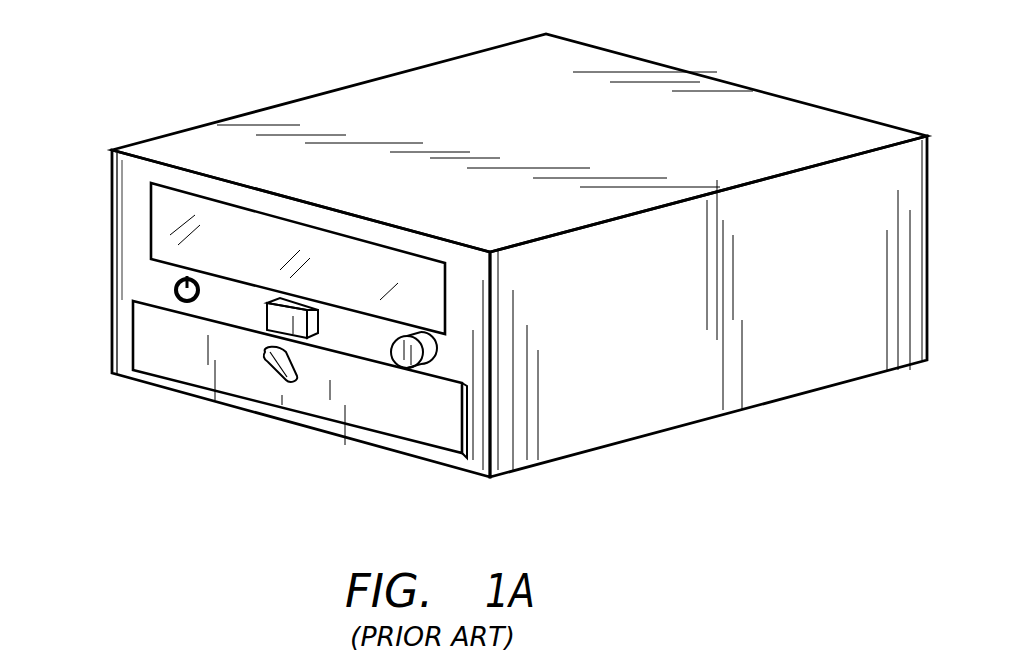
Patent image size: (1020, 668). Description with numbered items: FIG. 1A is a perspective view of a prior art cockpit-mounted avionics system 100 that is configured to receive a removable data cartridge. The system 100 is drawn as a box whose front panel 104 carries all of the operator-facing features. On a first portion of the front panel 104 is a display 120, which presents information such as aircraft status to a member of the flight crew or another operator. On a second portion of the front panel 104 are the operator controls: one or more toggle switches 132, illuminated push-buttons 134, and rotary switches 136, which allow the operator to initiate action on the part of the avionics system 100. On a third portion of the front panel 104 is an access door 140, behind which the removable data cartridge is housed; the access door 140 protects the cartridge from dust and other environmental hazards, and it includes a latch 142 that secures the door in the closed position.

The avionics system 100 is at (668, 65).
The front panel 104 is at (135, 213).
The display 120 is at (177, 213).
The toggle switch 132 is at (172, 278).
The illuminated push-button 134 is at (290, 310).
The rotary switch 136 is at (405, 363).
The access door 140 is at (185, 367).
The latch 142 is at (287, 383).